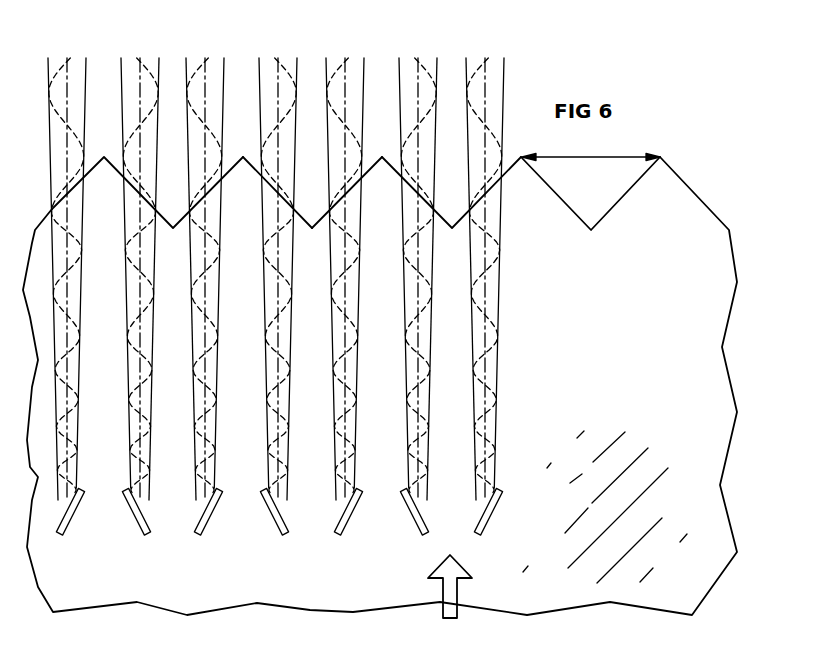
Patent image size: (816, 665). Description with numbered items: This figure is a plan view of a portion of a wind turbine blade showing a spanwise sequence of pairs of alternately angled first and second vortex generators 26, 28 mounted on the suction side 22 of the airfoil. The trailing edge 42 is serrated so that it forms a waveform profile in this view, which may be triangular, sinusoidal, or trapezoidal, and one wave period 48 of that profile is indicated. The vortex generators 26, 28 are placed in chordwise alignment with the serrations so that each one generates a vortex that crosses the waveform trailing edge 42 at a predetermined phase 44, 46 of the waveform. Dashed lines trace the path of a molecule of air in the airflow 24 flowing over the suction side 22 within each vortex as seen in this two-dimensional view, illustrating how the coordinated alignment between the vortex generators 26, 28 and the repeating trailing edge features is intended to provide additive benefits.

The suction side 22 is at (585, 409).
The airflow 24 is at (461, 569).
The first vortex generator 26 is at (276, 319).
The second vortex generator 28 is at (265, 319).
The trailing edge 42 is at (286, 173).
The predetermined phase 44 is at (344, 198).
The predetermined phase 46 is at (279, 198).
The wave period 48 is at (586, 160).